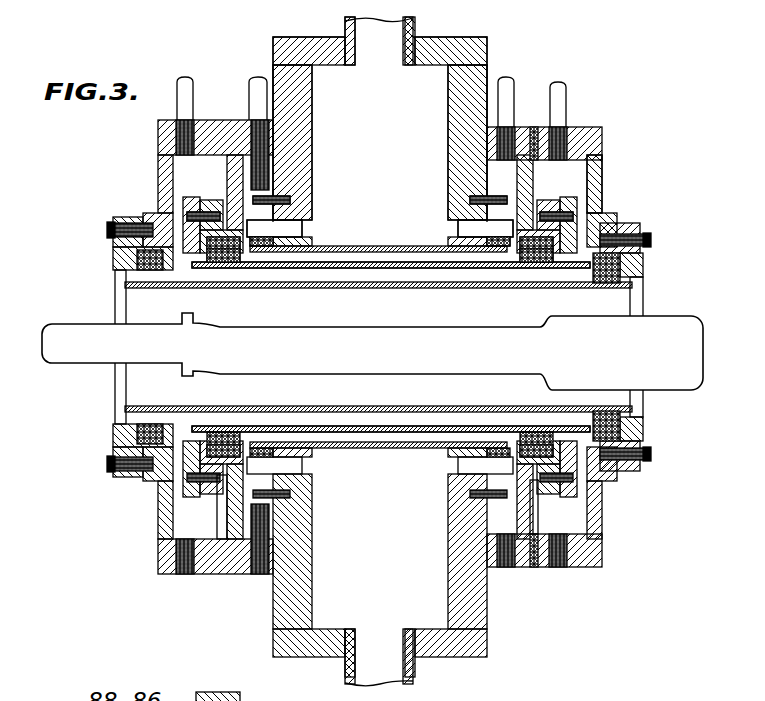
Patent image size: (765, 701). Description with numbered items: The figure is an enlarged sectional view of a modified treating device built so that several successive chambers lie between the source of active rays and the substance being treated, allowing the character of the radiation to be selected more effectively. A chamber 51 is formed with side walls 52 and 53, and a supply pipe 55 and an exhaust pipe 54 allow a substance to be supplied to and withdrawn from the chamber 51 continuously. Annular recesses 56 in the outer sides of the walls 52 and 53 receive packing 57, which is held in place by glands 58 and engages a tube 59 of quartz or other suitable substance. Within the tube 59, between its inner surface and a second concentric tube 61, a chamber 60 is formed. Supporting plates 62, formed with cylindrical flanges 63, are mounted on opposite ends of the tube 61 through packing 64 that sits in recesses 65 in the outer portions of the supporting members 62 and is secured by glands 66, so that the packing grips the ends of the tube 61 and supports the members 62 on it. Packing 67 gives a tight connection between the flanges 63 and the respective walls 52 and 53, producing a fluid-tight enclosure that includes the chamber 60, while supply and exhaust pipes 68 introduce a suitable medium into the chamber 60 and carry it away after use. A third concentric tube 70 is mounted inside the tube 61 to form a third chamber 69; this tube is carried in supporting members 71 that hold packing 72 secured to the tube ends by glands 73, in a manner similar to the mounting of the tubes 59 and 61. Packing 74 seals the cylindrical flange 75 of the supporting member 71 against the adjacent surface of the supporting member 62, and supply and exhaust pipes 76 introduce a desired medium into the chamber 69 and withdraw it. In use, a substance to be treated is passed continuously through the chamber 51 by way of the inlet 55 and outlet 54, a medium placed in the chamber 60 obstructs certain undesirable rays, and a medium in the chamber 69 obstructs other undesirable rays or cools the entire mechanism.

The chamber 51 is at (332, 96).
The side wall 52 is at (298, 128).
The side wall 53 is at (458, 108).
The exhaust pipe 54 is at (390, 686).
The supply pipe 55 is at (396, 29).
The annular recess 56 is at (305, 230).
The packing 57 is at (305, 228).
The gland 58 is at (255, 226).
The tube 59 is at (256, 438).
The chamber 60 is at (290, 432).
The second concentric tube 61 is at (328, 432).
The supporting plate 62 is at (230, 514).
The cylindrical flange 63 is at (488, 143).
The packing 64 is at (505, 252).
The recess 65 is at (507, 418).
The gland 66 is at (598, 228).
The packing 67 is at (268, 143).
The supply and exhaust pipes 68 is at (510, 93).
The third chamber 69 is at (410, 276).
The third concentric tube 70 is at (374, 288).
The supporting member 71 is at (590, 165).
The packing 72 is at (608, 290).
The gland 73 is at (633, 268).
The packing 74 is at (533, 127).
The cylindrical flange 75 is at (572, 132).
The supply and exhaust pipes 76 is at (560, 99).